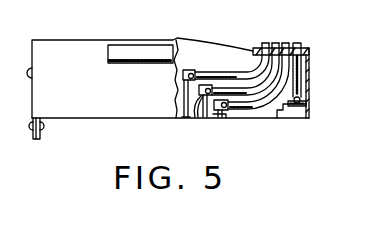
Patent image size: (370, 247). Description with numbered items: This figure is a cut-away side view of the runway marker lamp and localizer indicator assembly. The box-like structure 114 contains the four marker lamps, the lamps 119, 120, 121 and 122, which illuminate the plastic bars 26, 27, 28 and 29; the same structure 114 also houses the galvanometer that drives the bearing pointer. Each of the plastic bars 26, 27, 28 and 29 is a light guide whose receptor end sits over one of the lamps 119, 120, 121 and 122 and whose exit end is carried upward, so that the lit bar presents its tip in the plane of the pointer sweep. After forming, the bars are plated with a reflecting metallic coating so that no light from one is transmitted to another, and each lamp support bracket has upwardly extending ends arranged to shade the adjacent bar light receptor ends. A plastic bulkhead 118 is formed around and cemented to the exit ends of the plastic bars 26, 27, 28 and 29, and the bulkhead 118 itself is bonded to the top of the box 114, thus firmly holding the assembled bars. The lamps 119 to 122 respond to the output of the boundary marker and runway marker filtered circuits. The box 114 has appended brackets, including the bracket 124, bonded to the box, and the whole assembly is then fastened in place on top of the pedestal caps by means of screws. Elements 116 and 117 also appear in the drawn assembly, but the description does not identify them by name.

The box-like structure 114 is at (121, 118).
The bracket 124 is at (142, 46).
The plastic bulkhead 118 is at (309, 50).
The plastic bar 29 is at (262, 44).
The plastic bar 28 is at (275, 43).
The plastic bar 27 is at (286, 43).
The plastic bar 26 is at (300, 44).
The lamp 119 is at (297, 107).
The lamp 122 is at (188, 70).
The lamp 121 is at (201, 120).
The support stand 116 is at (207, 117).
The lamp 120 is at (221, 118).
The base 117 is at (226, 113).